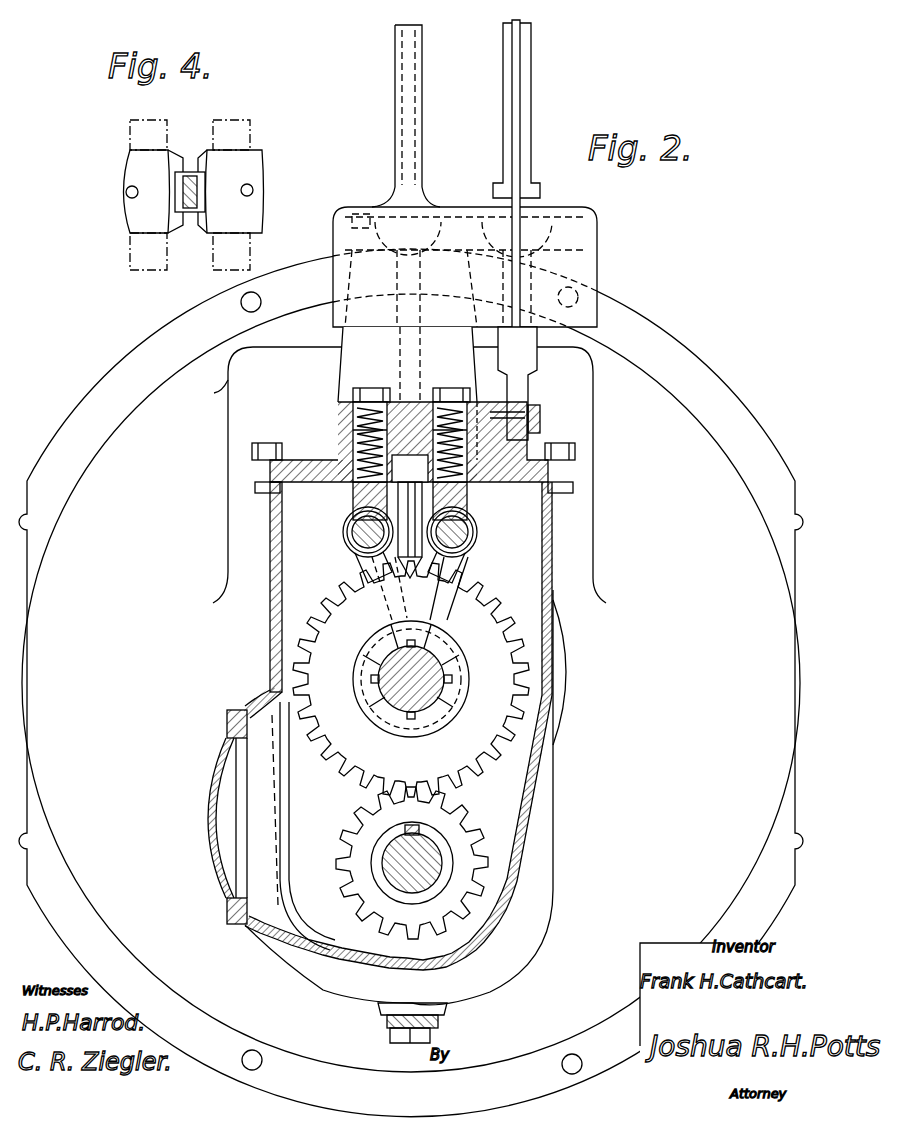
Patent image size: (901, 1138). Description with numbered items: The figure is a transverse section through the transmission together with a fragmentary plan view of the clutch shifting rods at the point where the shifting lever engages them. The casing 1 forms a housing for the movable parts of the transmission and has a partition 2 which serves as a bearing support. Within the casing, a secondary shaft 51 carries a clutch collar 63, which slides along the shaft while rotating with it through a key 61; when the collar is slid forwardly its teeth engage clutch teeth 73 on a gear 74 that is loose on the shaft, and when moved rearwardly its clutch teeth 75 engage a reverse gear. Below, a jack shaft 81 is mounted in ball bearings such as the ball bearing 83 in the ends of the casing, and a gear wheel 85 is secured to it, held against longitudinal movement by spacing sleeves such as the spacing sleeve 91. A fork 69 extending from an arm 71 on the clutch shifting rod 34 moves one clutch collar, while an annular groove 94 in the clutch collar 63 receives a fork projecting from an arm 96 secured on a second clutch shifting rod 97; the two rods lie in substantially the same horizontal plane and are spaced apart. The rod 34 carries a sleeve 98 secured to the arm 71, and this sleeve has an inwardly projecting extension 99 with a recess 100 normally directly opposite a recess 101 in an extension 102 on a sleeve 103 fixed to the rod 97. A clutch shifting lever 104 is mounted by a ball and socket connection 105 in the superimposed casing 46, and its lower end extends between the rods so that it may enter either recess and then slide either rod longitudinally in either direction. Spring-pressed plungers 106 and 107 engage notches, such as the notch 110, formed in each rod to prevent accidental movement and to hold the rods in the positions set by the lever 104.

In FIG. 2, the casing 1 is at (528, 812).
In FIG. 2, the partition 2 is at (380, 762).
In FIG. 4, the clutch shifting rod 34 is at (140, 250).
In FIG. 2, the clutch shifting rod 34 is at (358, 560).
In FIG. 2, the superimposed casing 46 is at (343, 360).
In FIG. 2, the secondary shaft 51 is at (448, 714).
In FIG. 2, the key 61 is at (378, 720).
In FIG. 2, the clutch collar 63 is at (414, 735).
In FIG. 2, the fork 69 is at (352, 578).
In FIG. 2, the arm 71 is at (411, 679).
In FIG. 2, the clutch teeth 73 is at (455, 696).
In FIG. 2, the gear 74 is at (452, 631).
In FIG. 2, the clutch teeth 75 is at (462, 669).
In FIG. 2, the jack shaft 81 is at (400, 862).
In FIG. 2, the ball bearing 83 is at (412, 826).
In FIG. 2, the gear wheel 85 is at (358, 903).
In FIG. 2, the spacing sleeve 91 is at (410, 905).
In FIG. 2, the annular groove 94 is at (352, 679).
In FIG. 2, the arm 96 is at (473, 548).
In FIG. 4, the second clutch shifting rod 97 is at (235, 253).
In FIG. 2, the second clutch shifting rod 97 is at (455, 532).
In FIG. 4, the sleeve 98 is at (130, 217).
In FIG. 2, the sleeve 98 is at (345, 522).
In FIG. 4, the extension 99 is at (177, 237).
In FIG. 4, the recess 100 is at (185, 170).
In FIG. 4, the recess 101 is at (200, 186).
In FIG. 4, the extension 102 is at (200, 222).
In FIG. 2, the extension 102 is at (420, 588).
In FIG. 4, the sleeve 103 is at (255, 210).
In FIG. 2, the clutch shifting lever 104 is at (422, 92).
In FIG. 2, the ball and socket connection 105 is at (448, 235).
In FIG. 2, the spring-pressed plunger 106 is at (358, 495).
In FIG. 2, the spring-pressed plunger 107 is at (463, 495).
In FIG. 2, the notch 110 is at (350, 538).